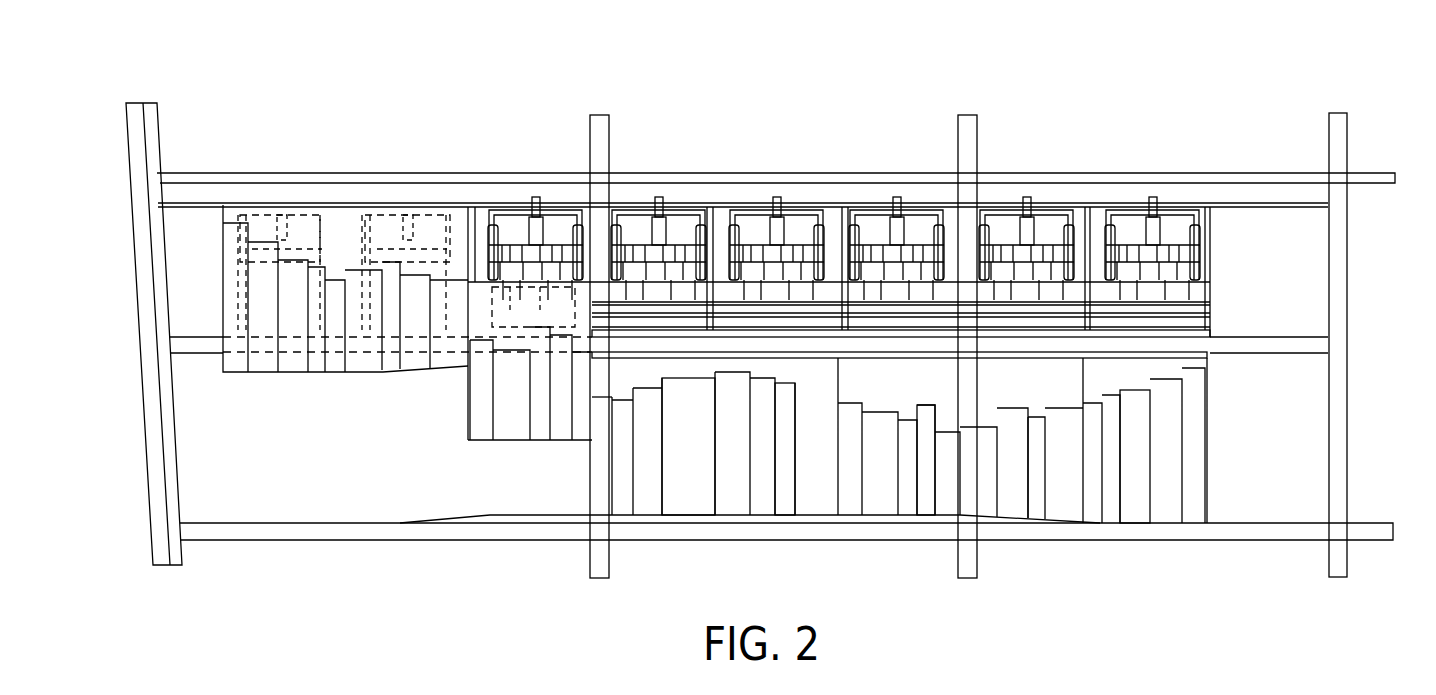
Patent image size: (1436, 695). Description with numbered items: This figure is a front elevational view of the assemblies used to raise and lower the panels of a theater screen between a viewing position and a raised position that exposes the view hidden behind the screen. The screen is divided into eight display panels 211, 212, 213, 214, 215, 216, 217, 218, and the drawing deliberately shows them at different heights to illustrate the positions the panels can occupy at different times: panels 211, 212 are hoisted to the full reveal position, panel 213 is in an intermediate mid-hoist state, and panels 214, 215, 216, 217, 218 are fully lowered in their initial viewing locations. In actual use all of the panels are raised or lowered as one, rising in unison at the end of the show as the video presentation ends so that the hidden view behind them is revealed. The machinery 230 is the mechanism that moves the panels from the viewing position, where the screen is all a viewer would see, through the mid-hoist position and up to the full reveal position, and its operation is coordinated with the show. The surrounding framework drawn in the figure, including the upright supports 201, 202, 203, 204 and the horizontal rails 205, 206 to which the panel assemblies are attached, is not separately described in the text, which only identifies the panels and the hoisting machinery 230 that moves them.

The left support post 201 is at (130, 197).
The right support post 202 is at (1348, 465).
The first intermediate post 203 is at (591, 140).
The second intermediate post 204 is at (958, 145).
The lower rail 205 is at (1278, 540).
The upper rail 206 is at (1362, 173).
The display panel 211 is at (308, 237).
The display panel 212 is at (387, 237).
The display panel 213 is at (513, 303).
The display panel 214 is at (667, 373).
The display panel 215 is at (793, 383).
The display panel 216 is at (928, 383).
The display panel 217 is at (1040, 390).
The display panel 218 is at (1140, 377).
The machinery 230 is at (1158, 253).